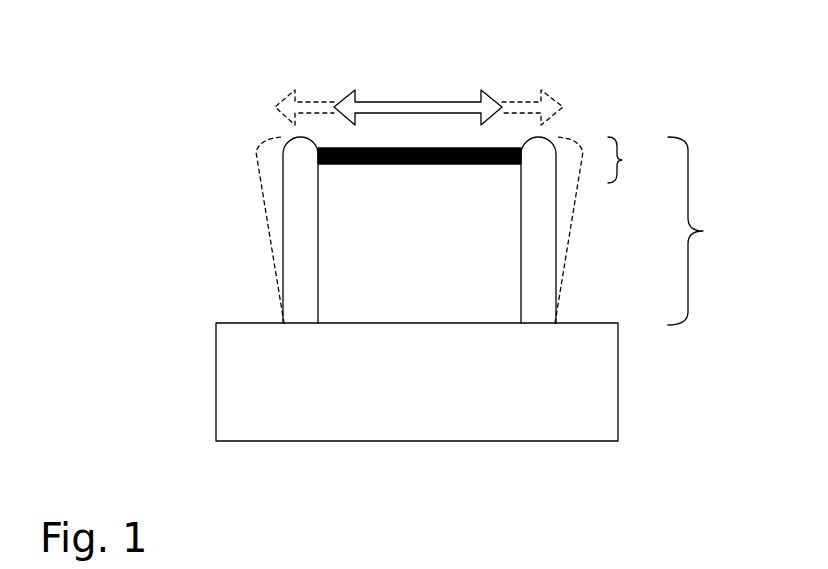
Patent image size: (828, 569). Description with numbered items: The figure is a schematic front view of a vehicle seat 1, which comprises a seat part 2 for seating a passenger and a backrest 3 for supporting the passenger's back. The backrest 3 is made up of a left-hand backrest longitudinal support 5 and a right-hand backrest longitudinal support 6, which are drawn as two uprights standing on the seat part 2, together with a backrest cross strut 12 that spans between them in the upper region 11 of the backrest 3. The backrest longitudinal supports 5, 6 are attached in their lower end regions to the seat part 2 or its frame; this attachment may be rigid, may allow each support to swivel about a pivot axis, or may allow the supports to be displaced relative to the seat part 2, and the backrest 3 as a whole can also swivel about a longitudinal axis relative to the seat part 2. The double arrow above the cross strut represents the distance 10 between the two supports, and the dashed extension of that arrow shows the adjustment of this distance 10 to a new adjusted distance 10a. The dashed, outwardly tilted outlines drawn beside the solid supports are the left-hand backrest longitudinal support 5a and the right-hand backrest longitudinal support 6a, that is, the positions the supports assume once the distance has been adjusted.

The vehicle seat 1 is at (655, 50).
The seat part 2 is at (538, 425).
The backrest 3 is at (695, 231).
The left-hand backrest longitudinal support 5 is at (297, 303).
The left-hand backrest longitudinal support 5a is at (262, 163).
The right-hand backrest longitudinal support 6 is at (543, 313).
The right-hand backrest longitudinal support 6a is at (563, 228).
The distance 10 is at (427, 100).
The adjusted distance 10a is at (516, 100).
The upper region 11 is at (628, 160).
The backrest cross strut 12 is at (410, 166).